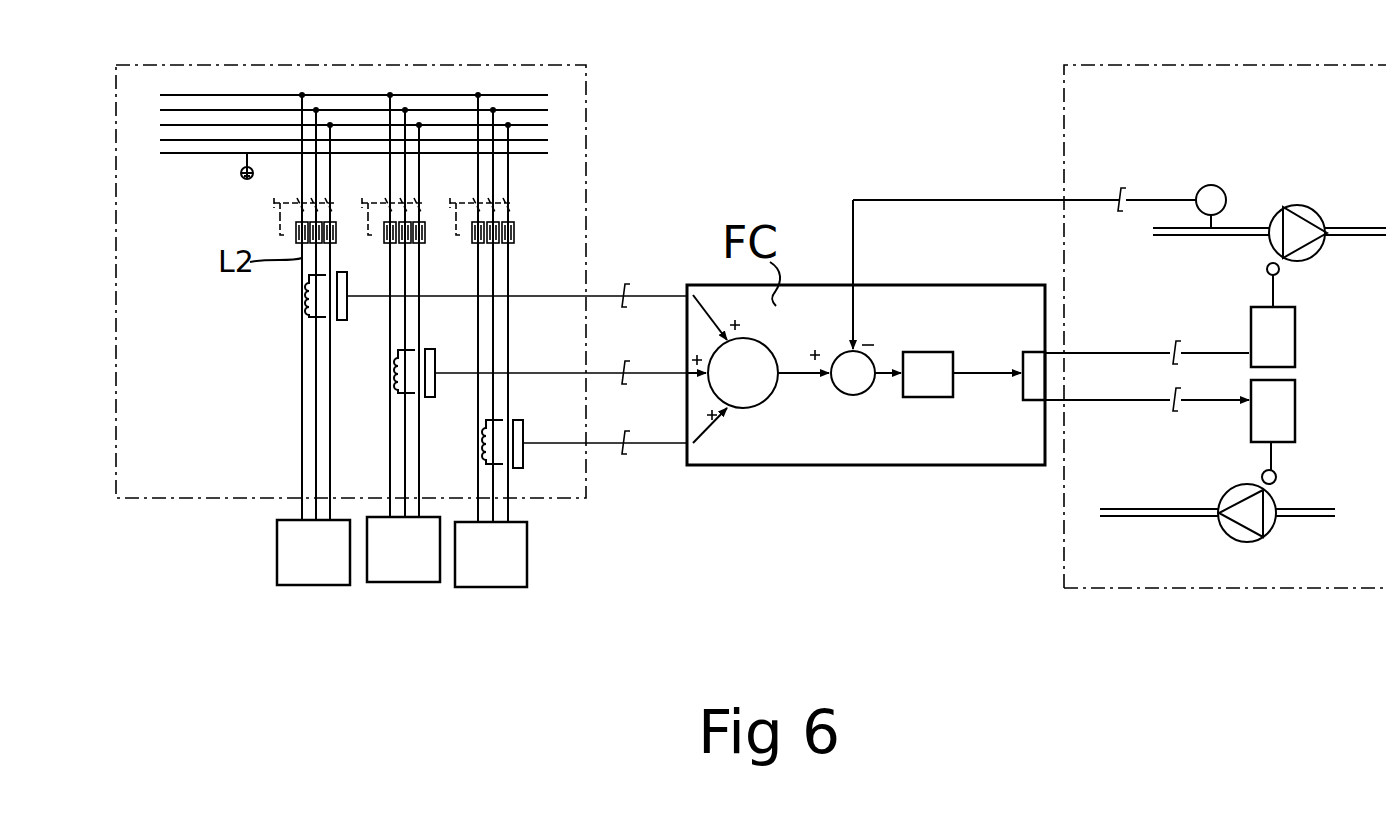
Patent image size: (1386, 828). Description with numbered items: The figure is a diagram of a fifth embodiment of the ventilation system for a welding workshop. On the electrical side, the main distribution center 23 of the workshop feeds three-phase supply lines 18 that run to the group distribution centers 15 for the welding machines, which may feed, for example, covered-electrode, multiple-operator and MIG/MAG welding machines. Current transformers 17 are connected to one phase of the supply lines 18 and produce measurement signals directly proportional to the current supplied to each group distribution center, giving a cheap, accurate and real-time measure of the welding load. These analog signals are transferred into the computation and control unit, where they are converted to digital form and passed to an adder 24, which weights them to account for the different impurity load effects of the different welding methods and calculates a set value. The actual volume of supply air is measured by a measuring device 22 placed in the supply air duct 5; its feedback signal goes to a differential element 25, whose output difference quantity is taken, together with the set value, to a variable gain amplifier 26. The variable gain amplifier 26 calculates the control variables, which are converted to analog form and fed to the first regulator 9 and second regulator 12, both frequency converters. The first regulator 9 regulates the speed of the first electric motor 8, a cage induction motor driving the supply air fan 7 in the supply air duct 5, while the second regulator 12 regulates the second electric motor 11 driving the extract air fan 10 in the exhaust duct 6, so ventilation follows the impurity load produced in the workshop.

The supply air duct 5 is at (1340, 230).
The exhaust duct 6 is at (1320, 518).
The supply air fan 7 is at (1300, 205).
The first electric motor 8 is at (1280, 272).
The first regulator 9 is at (1295, 340).
The extract air fan 10 is at (1247, 542).
The second electric motor 11 is at (1278, 480).
The second regulator 12 is at (1285, 422).
The group distribution centers 15 is at (497, 587).
The current transformers 17 is at (347, 315).
The three-phase supply lines 18 is at (298, 368).
The measuring device 22 is at (1217, 185).
The main distribution center 23 is at (257, 65).
The adder 24 is at (752, 400).
The differential element 25 is at (853, 395).
The variable gain amplifier 26 is at (930, 397).